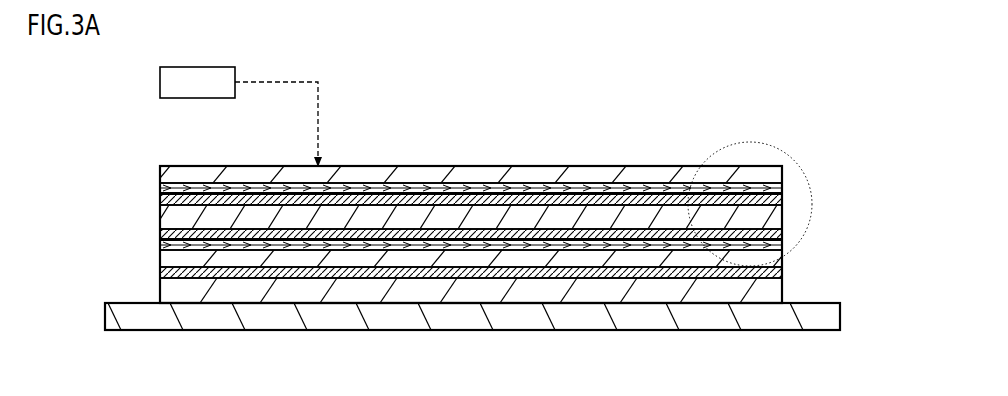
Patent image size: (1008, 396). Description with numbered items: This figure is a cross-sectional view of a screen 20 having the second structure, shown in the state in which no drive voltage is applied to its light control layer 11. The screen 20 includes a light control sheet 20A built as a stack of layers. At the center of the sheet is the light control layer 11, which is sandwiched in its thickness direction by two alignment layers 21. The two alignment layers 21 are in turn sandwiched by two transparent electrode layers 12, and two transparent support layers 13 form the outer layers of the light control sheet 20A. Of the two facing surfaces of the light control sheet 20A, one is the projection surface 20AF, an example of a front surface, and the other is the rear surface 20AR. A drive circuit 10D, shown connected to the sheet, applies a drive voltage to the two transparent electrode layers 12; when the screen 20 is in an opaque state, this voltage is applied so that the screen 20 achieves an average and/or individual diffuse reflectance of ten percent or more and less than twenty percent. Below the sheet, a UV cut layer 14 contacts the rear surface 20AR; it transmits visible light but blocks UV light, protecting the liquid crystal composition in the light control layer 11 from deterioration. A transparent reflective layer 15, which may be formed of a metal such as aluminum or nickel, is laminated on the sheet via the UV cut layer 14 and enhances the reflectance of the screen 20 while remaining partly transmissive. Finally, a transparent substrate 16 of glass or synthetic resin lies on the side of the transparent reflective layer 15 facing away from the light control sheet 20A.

The drive circuit 10D is at (160, 79).
The screen 20 is at (850, 155).
The light control sheet 20A is at (100, 113).
The projection surface 20AF is at (255, 165).
The rear surface 20AR is at (192, 267).
The transparent support layer 13 is at (160, 172).
The transparent electrode layer 12 is at (160, 187).
The alignment layer 21 is at (160, 198).
The light control layer 11 is at (170, 218).
The UV cut layer 14 is at (782, 271).
The transparent reflective layer 15 is at (782, 291).
The transparent substrate 16 is at (841, 317).